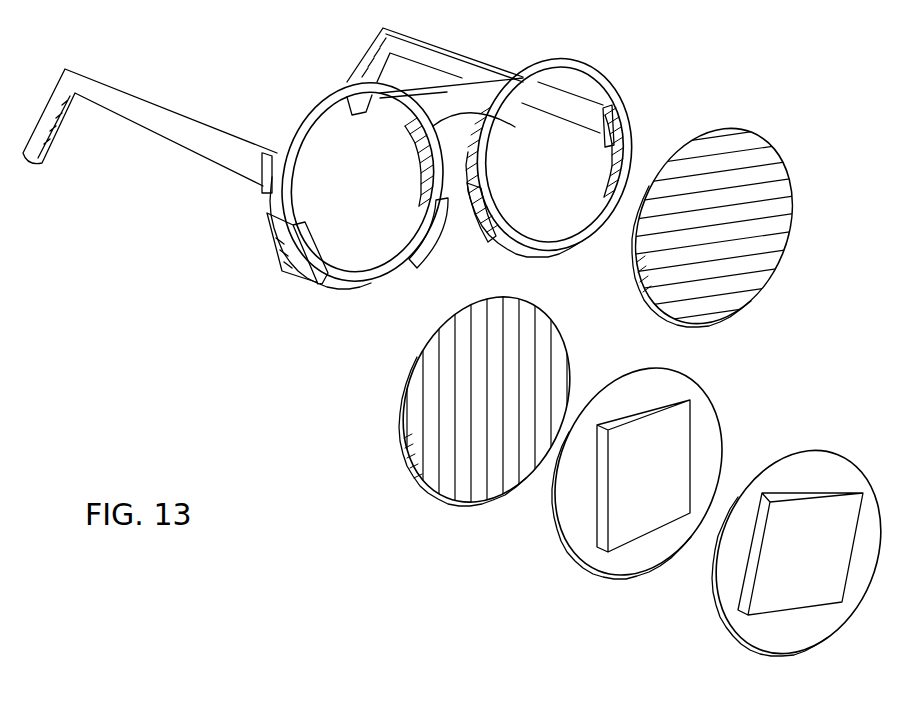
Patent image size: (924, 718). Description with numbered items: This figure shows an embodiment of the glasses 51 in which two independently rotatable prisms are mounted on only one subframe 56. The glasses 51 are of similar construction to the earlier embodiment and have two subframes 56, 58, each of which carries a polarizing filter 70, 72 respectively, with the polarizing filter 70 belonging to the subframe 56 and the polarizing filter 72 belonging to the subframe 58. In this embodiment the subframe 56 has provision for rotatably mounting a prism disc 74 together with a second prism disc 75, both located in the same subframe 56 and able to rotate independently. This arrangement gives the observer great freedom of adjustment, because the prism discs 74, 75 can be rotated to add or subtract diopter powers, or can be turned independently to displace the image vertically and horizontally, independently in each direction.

The glasses 51 is at (345, 158).
The subframe 56 is at (388, 273).
The subframe 58 is at (555, 252).
The polarizing filter 70 is at (452, 490).
The polarizing filter 72 is at (765, 275).
The prism disc 74 is at (605, 562).
The lens disc with square block 75 is at (752, 637).